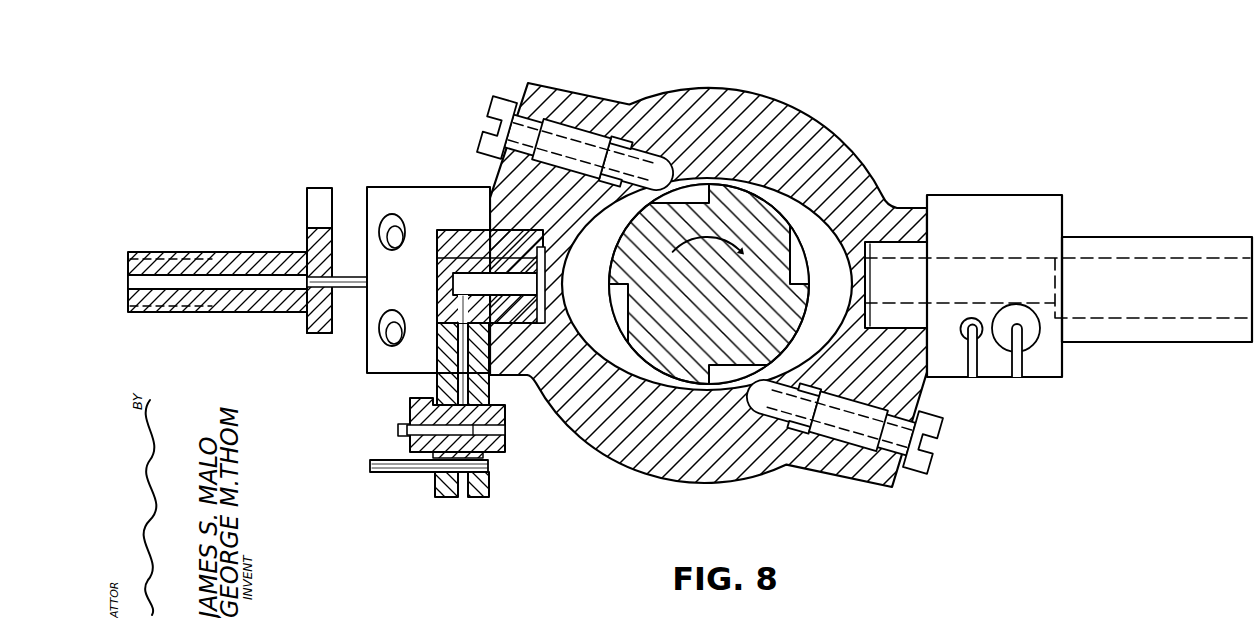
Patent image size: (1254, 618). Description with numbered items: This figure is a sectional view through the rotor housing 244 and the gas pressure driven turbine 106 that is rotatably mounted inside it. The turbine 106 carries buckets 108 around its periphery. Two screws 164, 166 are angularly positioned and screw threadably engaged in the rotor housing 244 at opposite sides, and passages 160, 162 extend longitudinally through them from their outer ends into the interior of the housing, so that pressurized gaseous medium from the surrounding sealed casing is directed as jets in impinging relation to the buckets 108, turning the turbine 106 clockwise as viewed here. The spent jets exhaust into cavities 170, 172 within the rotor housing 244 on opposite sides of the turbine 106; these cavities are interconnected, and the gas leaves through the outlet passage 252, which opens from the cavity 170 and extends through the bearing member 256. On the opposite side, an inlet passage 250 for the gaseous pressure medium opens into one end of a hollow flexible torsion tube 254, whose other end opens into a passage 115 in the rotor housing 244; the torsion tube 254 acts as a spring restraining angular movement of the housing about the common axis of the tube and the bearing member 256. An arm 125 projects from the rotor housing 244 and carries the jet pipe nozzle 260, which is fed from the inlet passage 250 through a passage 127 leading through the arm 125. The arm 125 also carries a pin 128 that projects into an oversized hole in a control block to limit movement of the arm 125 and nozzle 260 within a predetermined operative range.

The turbine 106 is at (696, 300).
The buckets 108 is at (699, 177).
The passage 115 is at (470, 276).
The arm 125 is at (488, 400).
The passage 127 is at (462, 382).
The pin 128 is at (397, 470).
The passage 160 is at (567, 143).
The passage 162 is at (850, 423).
The screw 164 is at (527, 113).
The screw 166 is at (832, 427).
The cavity 170 is at (843, 293).
The cavity 172 is at (545, 383).
The rotor housing 244 is at (788, 115).
The inlet passage 250 is at (177, 282).
The outlet passage 252 is at (1157, 258).
The torsion tube 254 is at (353, 290).
The bearing member 256 is at (1142, 333).
The jet pipe nozzle 260 is at (398, 430).